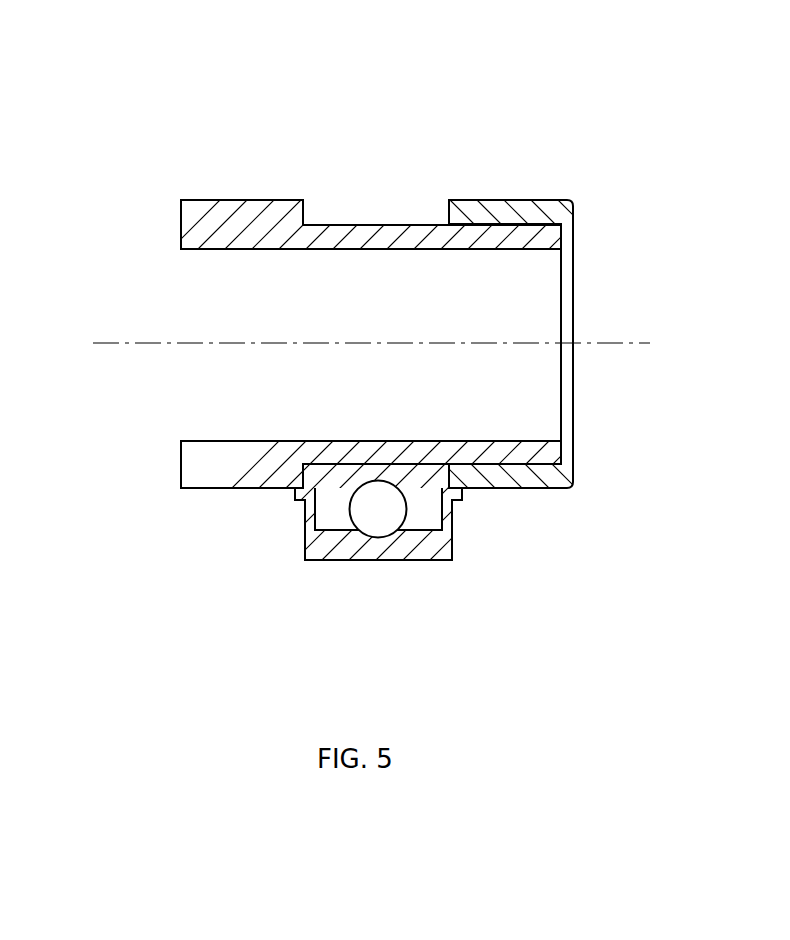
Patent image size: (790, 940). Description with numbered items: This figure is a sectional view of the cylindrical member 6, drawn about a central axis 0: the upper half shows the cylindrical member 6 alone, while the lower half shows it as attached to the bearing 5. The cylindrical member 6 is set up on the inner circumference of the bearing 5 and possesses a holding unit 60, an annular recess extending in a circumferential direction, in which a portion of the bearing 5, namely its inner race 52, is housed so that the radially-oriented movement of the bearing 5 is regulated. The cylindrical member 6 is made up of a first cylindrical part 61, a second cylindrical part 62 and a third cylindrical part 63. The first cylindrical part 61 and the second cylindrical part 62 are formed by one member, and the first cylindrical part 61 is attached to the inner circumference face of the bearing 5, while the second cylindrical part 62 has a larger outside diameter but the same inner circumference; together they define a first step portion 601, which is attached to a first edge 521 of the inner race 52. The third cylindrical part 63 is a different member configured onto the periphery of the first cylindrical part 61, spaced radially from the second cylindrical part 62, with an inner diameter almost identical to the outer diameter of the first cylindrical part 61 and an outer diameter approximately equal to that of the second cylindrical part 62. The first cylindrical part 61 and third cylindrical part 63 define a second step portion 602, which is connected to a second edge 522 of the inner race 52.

The central axis 0 is at (117, 343).
The bearing 5 is at (455, 457).
The cylindrical member 6 is at (577, 119).
The inner race 52 is at (396, 481).
The first edge 521 is at (305, 468).
The second edge 522 is at (447, 470).
The holding unit 60 is at (379, 225).
The first step portion 601 is at (305, 210).
The second step portion 602 is at (449, 212).
The first cylindrical part 61 is at (377, 250).
The second cylindrical part 62 is at (243, 250).
The third cylindrical part 63 is at (538, 200).